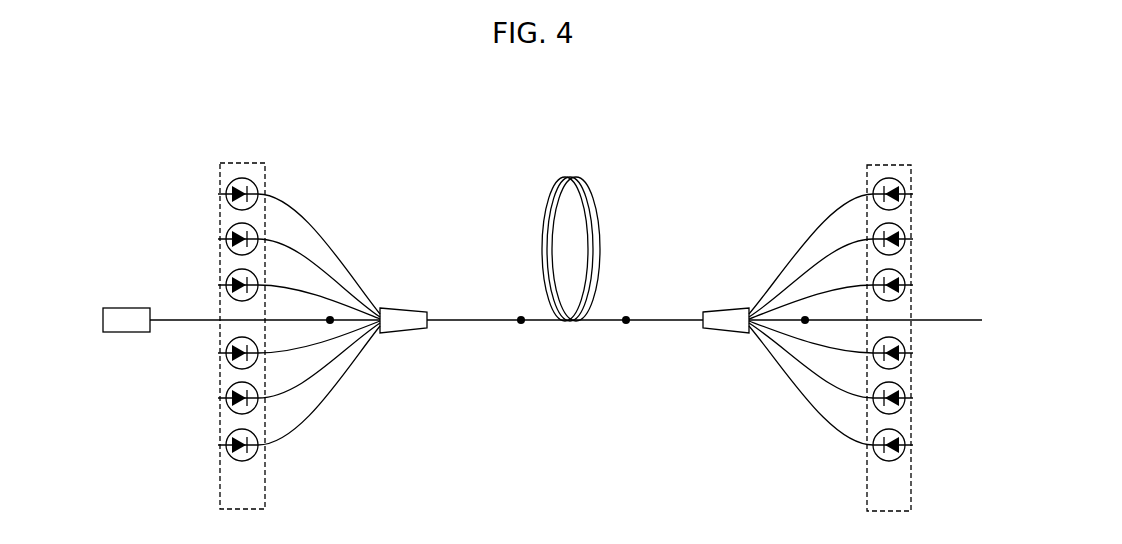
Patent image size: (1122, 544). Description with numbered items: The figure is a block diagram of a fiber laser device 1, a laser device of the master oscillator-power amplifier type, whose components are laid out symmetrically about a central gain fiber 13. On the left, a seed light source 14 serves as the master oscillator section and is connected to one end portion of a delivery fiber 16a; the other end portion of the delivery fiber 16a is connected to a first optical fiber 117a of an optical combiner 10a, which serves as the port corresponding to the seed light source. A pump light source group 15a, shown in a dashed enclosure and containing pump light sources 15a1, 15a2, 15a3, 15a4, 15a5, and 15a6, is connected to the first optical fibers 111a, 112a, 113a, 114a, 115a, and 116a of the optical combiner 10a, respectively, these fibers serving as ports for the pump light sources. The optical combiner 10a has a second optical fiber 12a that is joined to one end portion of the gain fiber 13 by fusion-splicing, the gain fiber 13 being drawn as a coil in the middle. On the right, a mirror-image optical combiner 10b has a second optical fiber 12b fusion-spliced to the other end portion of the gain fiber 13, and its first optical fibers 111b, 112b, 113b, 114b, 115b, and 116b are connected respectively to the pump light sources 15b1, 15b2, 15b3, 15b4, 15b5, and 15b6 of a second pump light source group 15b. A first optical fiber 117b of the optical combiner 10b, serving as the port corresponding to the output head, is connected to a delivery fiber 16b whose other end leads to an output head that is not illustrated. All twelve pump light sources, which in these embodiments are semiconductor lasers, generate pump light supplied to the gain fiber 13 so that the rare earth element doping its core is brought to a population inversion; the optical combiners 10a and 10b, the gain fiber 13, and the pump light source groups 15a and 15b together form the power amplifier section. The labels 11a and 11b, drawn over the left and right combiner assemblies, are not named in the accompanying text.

The fiber laser device 1 is at (652, 132).
The optical combiner 10a is at (410, 297).
The optical combiner 10b is at (720, 297).
The optical transmitter unit 11a is at (347, 182).
The optical receiver unit 11b is at (785, 183).
The second optical fiber 12a is at (463, 320).
The second optical fiber 12b is at (670, 320).
The gain fiber 13 is at (570, 177).
The seed light source 14 is at (120, 307).
The pump light source group 15a is at (260, 503).
The pump light source 15a1 is at (222, 194).
The pump light source 15a2 is at (222, 239).
The pump light source 15a3 is at (222, 285).
The pump light source 15a4 is at (222, 353).
The pump light source 15a5 is at (222, 398).
The pump light source 15a6 is at (222, 445).
The pump light source group 15b is at (907, 505).
The pump light source 15b1 is at (909, 194).
The pump light source 15b2 is at (909, 239).
The pump light source 15b3 is at (909, 285).
The pump light source 15b4 is at (909, 353).
The pump light source 15b5 is at (909, 398).
The pump light source 15b6 is at (909, 445).
The delivery fiber 16a is at (235, 317).
The delivery fiber 16b is at (894, 318).
The first optical fiber 111a is at (365, 297).
The first optical fiber 112a is at (333, 282).
The first optical fiber 113a is at (297, 287).
The first optical fiber 114a is at (365, 340).
The first optical fiber 115a is at (330, 357).
The first optical fiber 116a is at (295, 350).
The first optical fiber 117a is at (338, 317).
The first optical fiber 111b is at (770, 298).
The first optical fiber 112b is at (802, 282).
The first optical fiber 113b is at (838, 287).
The first optical fiber 114b is at (762, 335).
The first optical fiber 115b is at (797, 350).
The first optical fiber 116b is at (830, 347).
The first optical fiber 117b is at (794, 318).